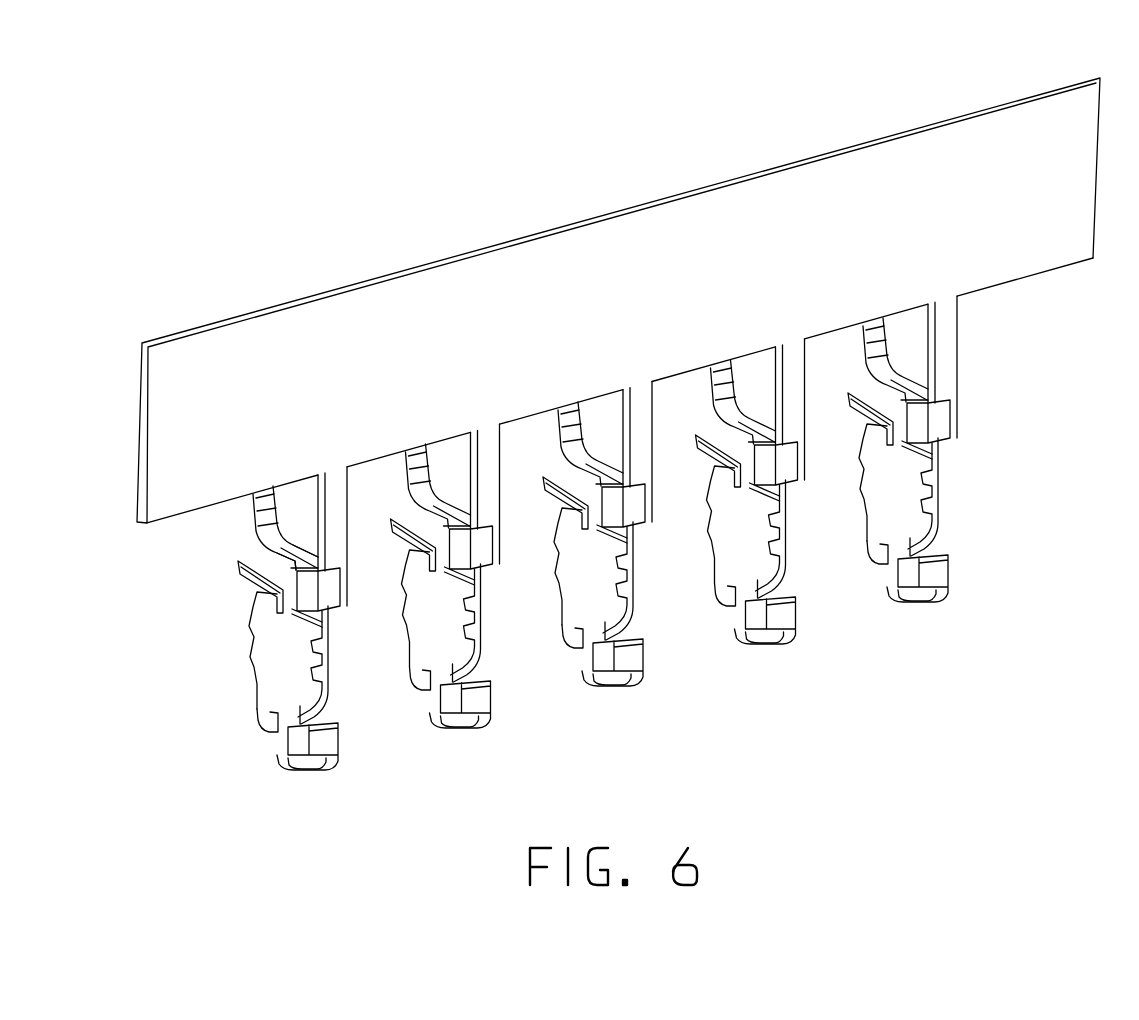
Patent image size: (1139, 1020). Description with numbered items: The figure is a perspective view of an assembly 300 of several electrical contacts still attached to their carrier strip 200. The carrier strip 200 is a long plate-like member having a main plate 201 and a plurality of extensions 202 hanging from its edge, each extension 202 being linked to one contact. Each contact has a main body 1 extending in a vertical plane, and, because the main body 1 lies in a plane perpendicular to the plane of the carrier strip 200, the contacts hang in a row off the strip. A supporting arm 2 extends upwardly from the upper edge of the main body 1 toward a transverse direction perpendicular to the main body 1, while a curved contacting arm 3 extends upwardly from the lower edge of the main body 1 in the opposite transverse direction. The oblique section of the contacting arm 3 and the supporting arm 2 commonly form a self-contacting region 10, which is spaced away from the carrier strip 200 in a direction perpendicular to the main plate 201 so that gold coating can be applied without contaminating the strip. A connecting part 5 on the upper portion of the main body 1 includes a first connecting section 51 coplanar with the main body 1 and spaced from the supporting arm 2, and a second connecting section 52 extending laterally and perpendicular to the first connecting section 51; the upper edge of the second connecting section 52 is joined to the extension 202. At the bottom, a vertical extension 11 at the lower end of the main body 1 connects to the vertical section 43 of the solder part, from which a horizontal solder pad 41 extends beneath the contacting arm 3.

The terminal strip assembly 300 is at (564, 166).
The carrier strip 200 is at (997, 147).
The main plate 201 is at (827, 190).
The extension 202 is at (335, 533).
The main body 1 is at (283, 665).
The supporting arm 2 is at (253, 582).
The contacting arm 3 is at (322, 652).
The connecting part 5 is at (917, 420).
The self-contacting region 10 is at (263, 533).
The vertical extension 11 is at (283, 740).
The horizontal solder pad 41 is at (287, 772).
The vertical section 43 is at (322, 742).
The first connecting section 51 is at (288, 573).
The second connecting section 52 is at (333, 590).